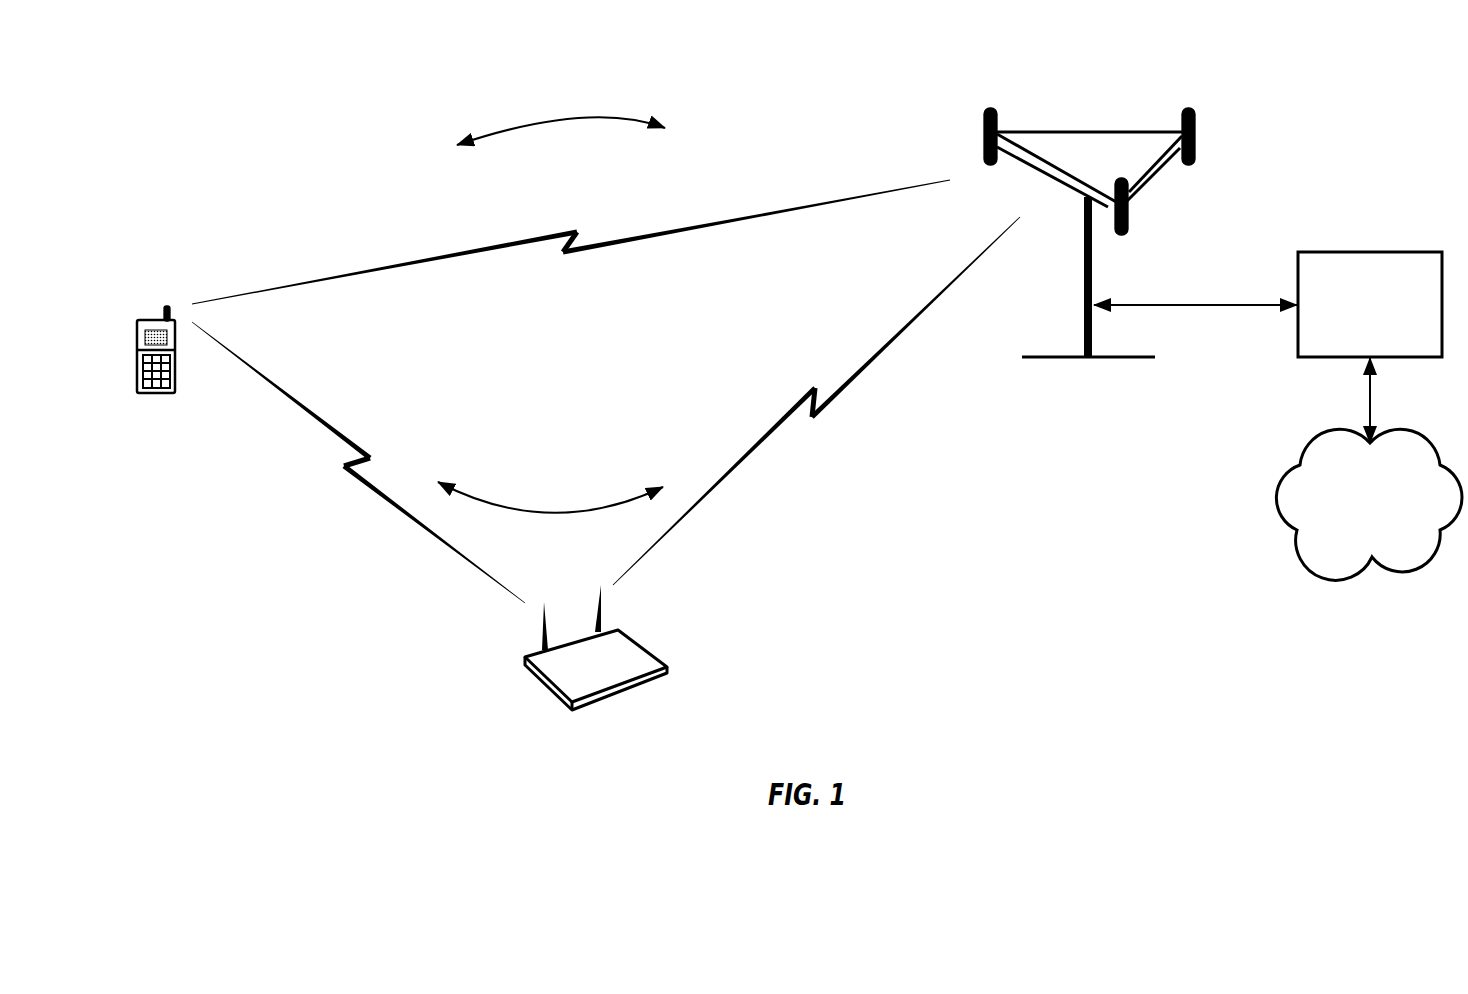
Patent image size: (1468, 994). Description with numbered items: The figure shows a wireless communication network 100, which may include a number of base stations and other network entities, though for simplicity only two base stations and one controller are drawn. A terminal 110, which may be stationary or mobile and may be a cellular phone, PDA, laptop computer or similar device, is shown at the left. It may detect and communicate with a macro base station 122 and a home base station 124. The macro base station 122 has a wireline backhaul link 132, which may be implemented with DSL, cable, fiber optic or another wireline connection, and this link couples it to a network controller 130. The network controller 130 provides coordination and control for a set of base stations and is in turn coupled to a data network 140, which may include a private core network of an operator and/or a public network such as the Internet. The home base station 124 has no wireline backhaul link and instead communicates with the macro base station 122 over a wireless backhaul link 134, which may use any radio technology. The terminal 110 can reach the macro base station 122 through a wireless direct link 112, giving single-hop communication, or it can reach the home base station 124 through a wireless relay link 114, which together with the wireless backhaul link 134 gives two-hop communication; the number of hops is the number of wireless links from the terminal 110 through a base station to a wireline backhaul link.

The wireless communication network 100 is at (268, 103).
The terminal 110 is at (152, 319).
The wireless direct link 112 is at (577, 254).
The wireless relay link 114 is at (359, 452).
The macro base station 122 is at (1085, 131).
The home base station 124 is at (634, 638).
The network controller 130 is at (1364, 252).
The wireline backhaul link 132 is at (1200, 308).
The wireless backhaul link 134 is at (798, 404).
The data network 140 is at (1416, 434).